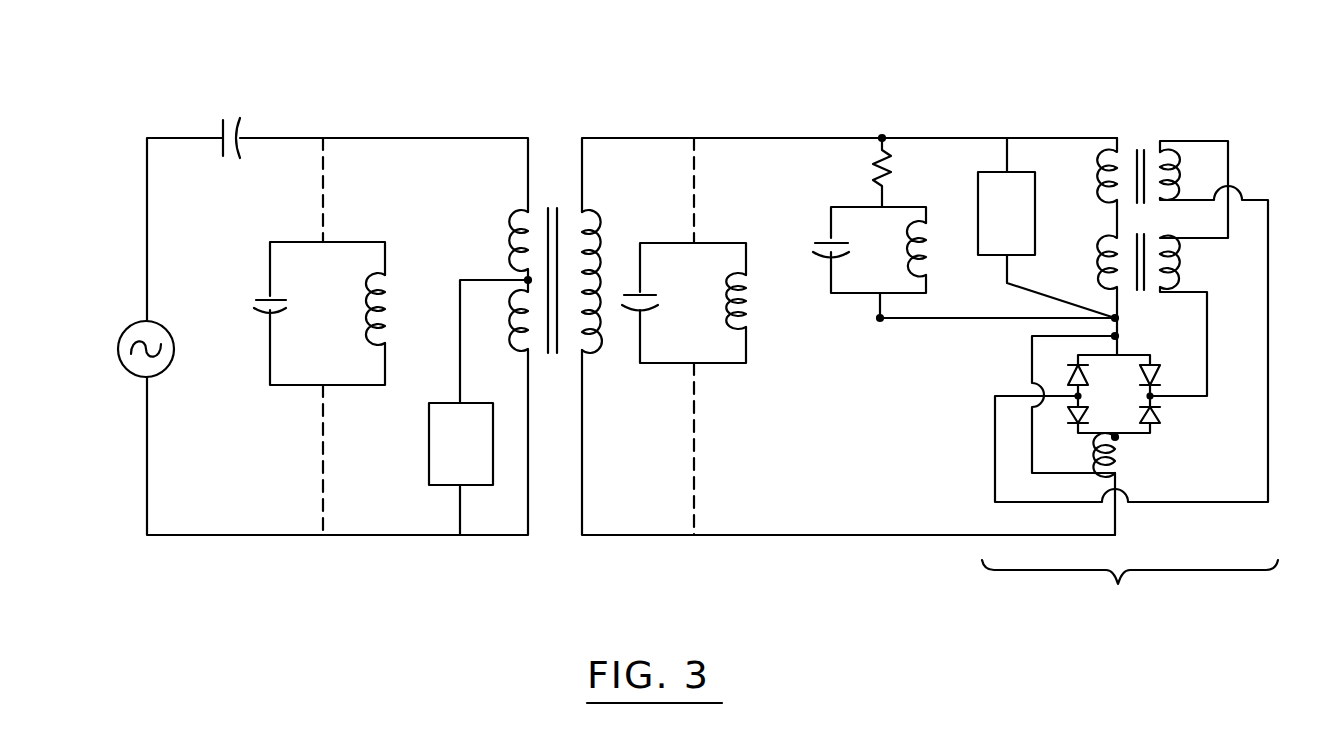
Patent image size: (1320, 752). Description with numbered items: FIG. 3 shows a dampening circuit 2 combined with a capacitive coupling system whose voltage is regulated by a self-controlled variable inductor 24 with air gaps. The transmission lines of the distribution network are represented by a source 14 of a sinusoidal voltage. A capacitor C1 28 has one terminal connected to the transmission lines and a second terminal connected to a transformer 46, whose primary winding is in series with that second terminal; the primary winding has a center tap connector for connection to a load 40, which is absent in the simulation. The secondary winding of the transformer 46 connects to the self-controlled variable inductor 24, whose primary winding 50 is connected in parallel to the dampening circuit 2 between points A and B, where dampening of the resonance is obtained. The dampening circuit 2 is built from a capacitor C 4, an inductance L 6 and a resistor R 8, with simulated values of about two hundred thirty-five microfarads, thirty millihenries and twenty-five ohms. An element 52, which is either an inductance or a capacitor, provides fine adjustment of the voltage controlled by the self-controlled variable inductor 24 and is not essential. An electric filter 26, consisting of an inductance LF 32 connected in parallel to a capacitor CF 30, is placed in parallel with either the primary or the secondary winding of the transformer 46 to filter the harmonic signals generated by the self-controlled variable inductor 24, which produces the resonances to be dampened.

The source 14 is at (118, 346).
The capacitor C1 28 is at (222, 131).
The filter 26 is at (266, 392).
The capacitor CF 30 is at (268, 298).
The inductance LF 32 is at (389, 288).
The load 40 is at (429, 447).
The transformer 46 is at (561, 142).
The dampening circuit 2 is at (952, 228).
The capacitor C 4 is at (818, 245).
The inductance L 6 is at (936, 224).
The resistor R 8 is at (879, 172).
The primary winding 50 is at (1088, 197).
The element 52 is at (1025, 221).
The self-controlled variable inductor 24 is at (1130, 487).